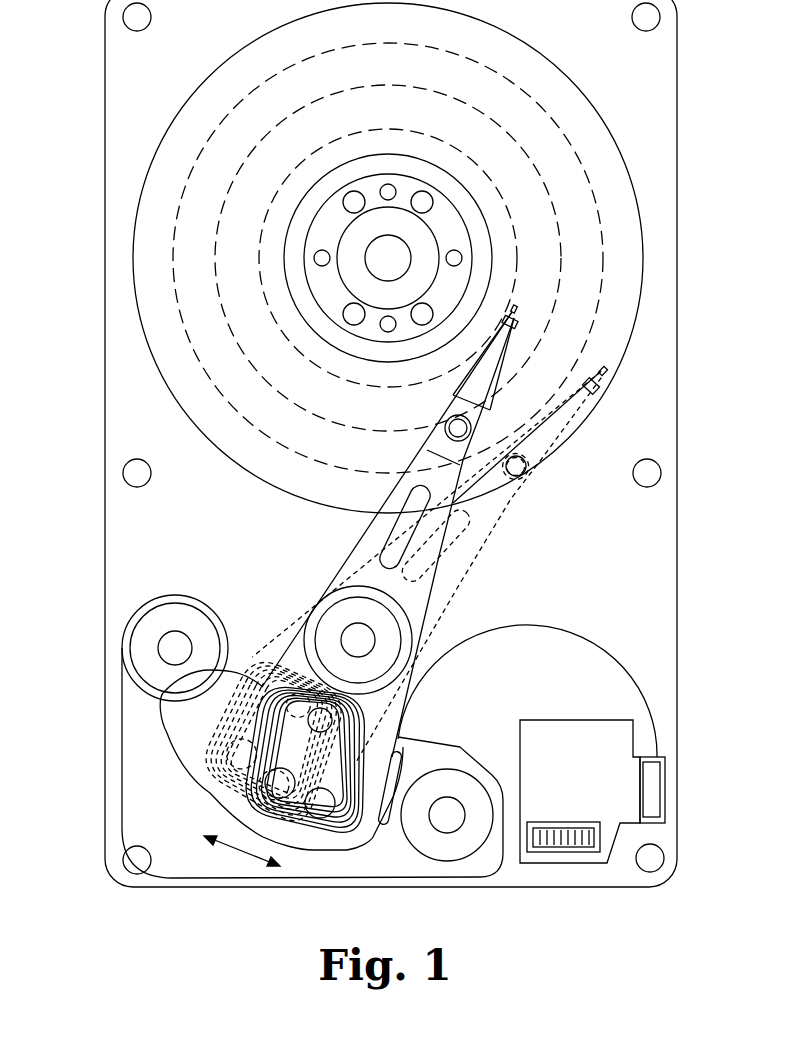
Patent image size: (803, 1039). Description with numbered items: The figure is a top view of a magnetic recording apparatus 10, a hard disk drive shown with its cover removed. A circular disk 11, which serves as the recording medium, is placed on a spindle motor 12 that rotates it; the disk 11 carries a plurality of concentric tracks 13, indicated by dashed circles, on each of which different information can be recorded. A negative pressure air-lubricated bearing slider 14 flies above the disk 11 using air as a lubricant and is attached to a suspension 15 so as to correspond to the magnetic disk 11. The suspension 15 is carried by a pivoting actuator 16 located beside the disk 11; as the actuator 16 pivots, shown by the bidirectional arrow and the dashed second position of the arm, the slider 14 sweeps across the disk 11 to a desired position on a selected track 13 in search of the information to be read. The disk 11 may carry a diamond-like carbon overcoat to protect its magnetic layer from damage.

The apparatus 10 is at (120, 361).
The disk 11 is at (157, 152).
The spindle motor 12 is at (342, 283).
The track 13 is at (217, 225).
The slider 14 is at (517, 318).
The suspension 15 is at (493, 372).
The actuator 16 is at (363, 553).